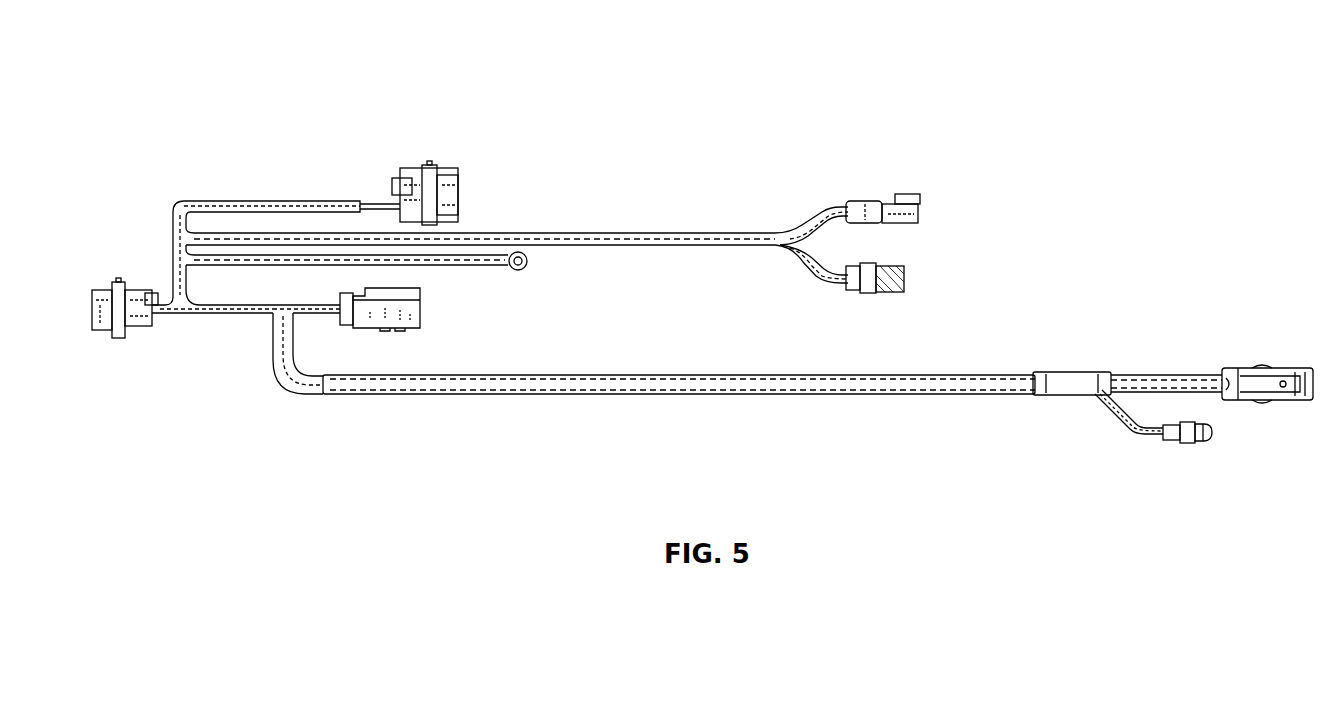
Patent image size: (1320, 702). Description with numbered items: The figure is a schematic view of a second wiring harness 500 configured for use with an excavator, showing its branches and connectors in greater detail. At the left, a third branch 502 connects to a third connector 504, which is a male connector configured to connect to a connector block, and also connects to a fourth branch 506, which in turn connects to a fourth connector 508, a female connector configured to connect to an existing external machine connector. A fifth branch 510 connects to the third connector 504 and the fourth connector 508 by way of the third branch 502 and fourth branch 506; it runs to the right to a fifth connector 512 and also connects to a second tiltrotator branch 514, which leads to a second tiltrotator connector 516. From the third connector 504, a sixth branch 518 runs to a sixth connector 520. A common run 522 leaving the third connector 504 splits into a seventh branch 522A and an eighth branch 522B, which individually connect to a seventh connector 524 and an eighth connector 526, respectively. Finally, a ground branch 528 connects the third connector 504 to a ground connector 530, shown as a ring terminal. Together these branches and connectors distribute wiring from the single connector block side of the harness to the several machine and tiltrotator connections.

The second wiring harness 500 is at (174, 88).
The third branch 502 is at (195, 314).
The third connector 504 is at (118, 333).
The fourth branch 506 is at (322, 304).
The fourth connector 508 is at (422, 311).
The fifth branch 510 is at (602, 374).
The fifth connector 512 is at (1256, 366).
The second tiltrotator branch 514 is at (1118, 414).
The second tiltrotator connector 516 is at (1184, 442).
The sixth branch 518 is at (276, 200).
The sixth connector 520 is at (437, 168).
The seventh and eighth branches 522 is at (561, 232).
The seventh branch 522A is at (805, 228).
The eighth branch 522B is at (808, 263).
The seventh connector 524 is at (893, 197).
The eighth connector 526 is at (876, 293).
The ground branch 528 is at (495, 262).
The ground connector 530 is at (530, 265).